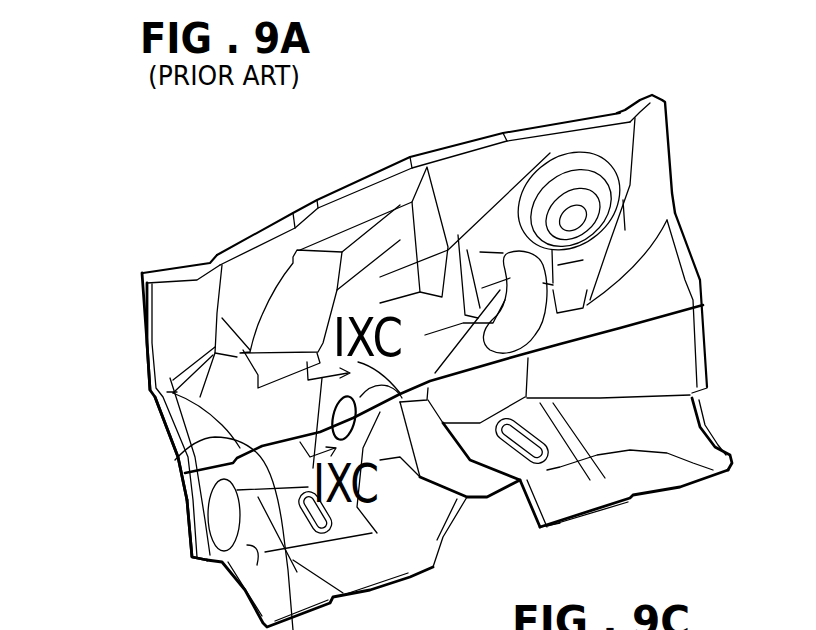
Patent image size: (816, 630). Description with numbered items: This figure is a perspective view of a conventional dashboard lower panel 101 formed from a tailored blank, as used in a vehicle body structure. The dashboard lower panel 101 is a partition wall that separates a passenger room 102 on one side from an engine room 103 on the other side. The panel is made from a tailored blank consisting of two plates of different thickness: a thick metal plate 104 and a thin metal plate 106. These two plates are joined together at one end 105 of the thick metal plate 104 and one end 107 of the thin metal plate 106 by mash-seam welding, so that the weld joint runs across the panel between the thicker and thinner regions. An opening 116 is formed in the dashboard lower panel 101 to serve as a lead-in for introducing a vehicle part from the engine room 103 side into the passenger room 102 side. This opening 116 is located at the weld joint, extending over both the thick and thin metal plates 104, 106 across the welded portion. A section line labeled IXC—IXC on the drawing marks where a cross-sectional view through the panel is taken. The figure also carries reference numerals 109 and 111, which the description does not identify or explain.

The dashboard lower panel 101 is at (182, 230).
The passenger room 102 is at (520, 131).
The engine room 103 is at (460, 125).
The thick metal plate 104 is at (215, 555).
The one end of the thick metal plate 105 is at (187, 518).
The thin metal plate 106 is at (178, 328).
The one end of the thin metal plate 107 is at (185, 452).
The floor panel 109 is at (607, 430).
The cowl flange 111 is at (393, 160).
The opening 116 is at (382, 412).